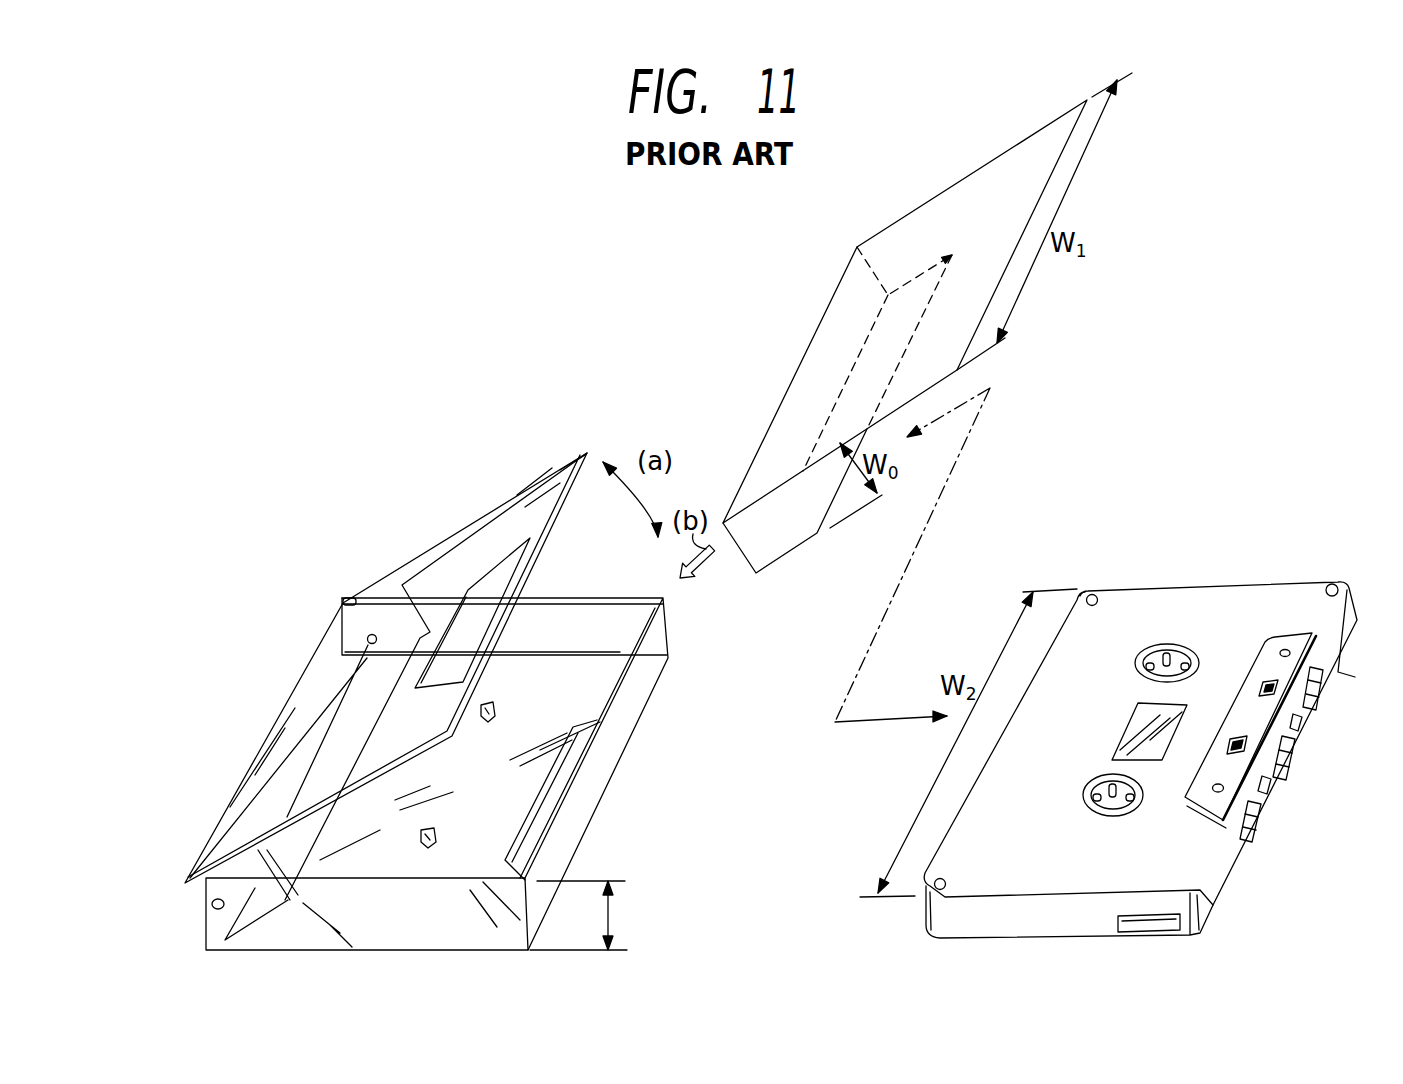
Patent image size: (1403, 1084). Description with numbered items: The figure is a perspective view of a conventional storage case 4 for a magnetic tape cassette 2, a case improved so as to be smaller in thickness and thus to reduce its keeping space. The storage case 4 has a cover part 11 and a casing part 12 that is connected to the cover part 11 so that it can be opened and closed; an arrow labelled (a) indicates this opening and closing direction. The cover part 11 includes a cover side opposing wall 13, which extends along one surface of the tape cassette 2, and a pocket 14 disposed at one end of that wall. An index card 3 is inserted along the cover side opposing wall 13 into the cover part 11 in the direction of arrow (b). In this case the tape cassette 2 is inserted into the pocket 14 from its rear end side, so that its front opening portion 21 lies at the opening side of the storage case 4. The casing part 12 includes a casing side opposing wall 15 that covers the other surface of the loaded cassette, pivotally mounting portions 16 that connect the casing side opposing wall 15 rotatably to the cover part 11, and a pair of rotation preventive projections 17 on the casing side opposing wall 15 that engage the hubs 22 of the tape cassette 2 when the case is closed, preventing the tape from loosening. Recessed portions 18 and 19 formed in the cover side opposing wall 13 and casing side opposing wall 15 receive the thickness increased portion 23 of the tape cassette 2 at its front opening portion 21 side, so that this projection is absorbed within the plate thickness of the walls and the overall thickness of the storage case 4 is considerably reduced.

The tape cassette 2 is at (1162, 711).
The index card 3 is at (908, 235).
The storage case 4 is at (385, 572).
The cover part 11 is at (543, 477).
The casing part 12 is at (461, 774).
The cover side opposing wall 13 is at (369, 674).
The pocket 14 is at (303, 840).
The casing side opposing wall 15 is at (598, 680).
The pivotally mounting portions 16 is at (367, 638).
The rotation preventive projections 17 is at (496, 707).
The recessed portion 18 is at (490, 633).
The recessed portion 19 is at (552, 797).
The front opening portion 21 is at (1322, 692).
The hubs 22 is at (1185, 652).
The thickness increased portion 23 is at (1258, 717).